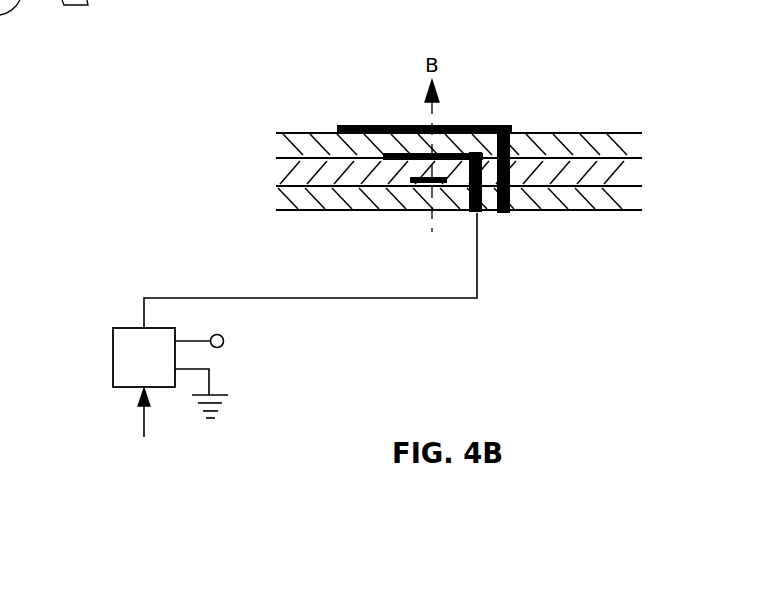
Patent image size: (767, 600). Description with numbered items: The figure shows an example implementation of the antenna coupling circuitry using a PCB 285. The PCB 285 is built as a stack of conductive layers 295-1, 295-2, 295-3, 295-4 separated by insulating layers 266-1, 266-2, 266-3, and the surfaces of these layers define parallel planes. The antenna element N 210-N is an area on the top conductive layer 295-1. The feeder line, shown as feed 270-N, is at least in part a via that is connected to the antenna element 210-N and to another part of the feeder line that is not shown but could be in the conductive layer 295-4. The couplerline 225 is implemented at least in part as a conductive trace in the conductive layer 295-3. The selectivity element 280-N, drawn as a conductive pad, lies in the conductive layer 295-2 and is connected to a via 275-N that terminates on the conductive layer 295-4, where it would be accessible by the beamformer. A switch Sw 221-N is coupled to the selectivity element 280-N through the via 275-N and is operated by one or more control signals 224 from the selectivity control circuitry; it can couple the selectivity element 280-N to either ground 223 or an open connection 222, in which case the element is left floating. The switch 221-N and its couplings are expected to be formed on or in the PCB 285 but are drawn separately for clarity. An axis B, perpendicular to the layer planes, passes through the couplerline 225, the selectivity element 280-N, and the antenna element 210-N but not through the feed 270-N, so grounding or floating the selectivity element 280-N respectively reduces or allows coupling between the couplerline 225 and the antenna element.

The PCB 285 is at (459, 142).
The antenna element N 210-N is at (575, 52).
The conductive layer 295-1 is at (565, 123).
The conductive layer 295-2 is at (260, 147).
The conductive layer 295-3 is at (264, 177).
The conductive layer 295-4 is at (568, 223).
The insulating layer 266-1 is at (655, 134).
The insulating layer 266-2 is at (656, 164).
The insulating layer 266-3 is at (654, 208).
The selectivity element 280-N is at (383, 160).
The couplerline 225 is at (393, 195).
The via 275-N is at (465, 228).
The feeder line 270-N is at (514, 221).
The switch 221-N is at (117, 341).
The open connection 222 is at (225, 347).
The ground 223 is at (227, 395).
The control signals 224 is at (140, 410).